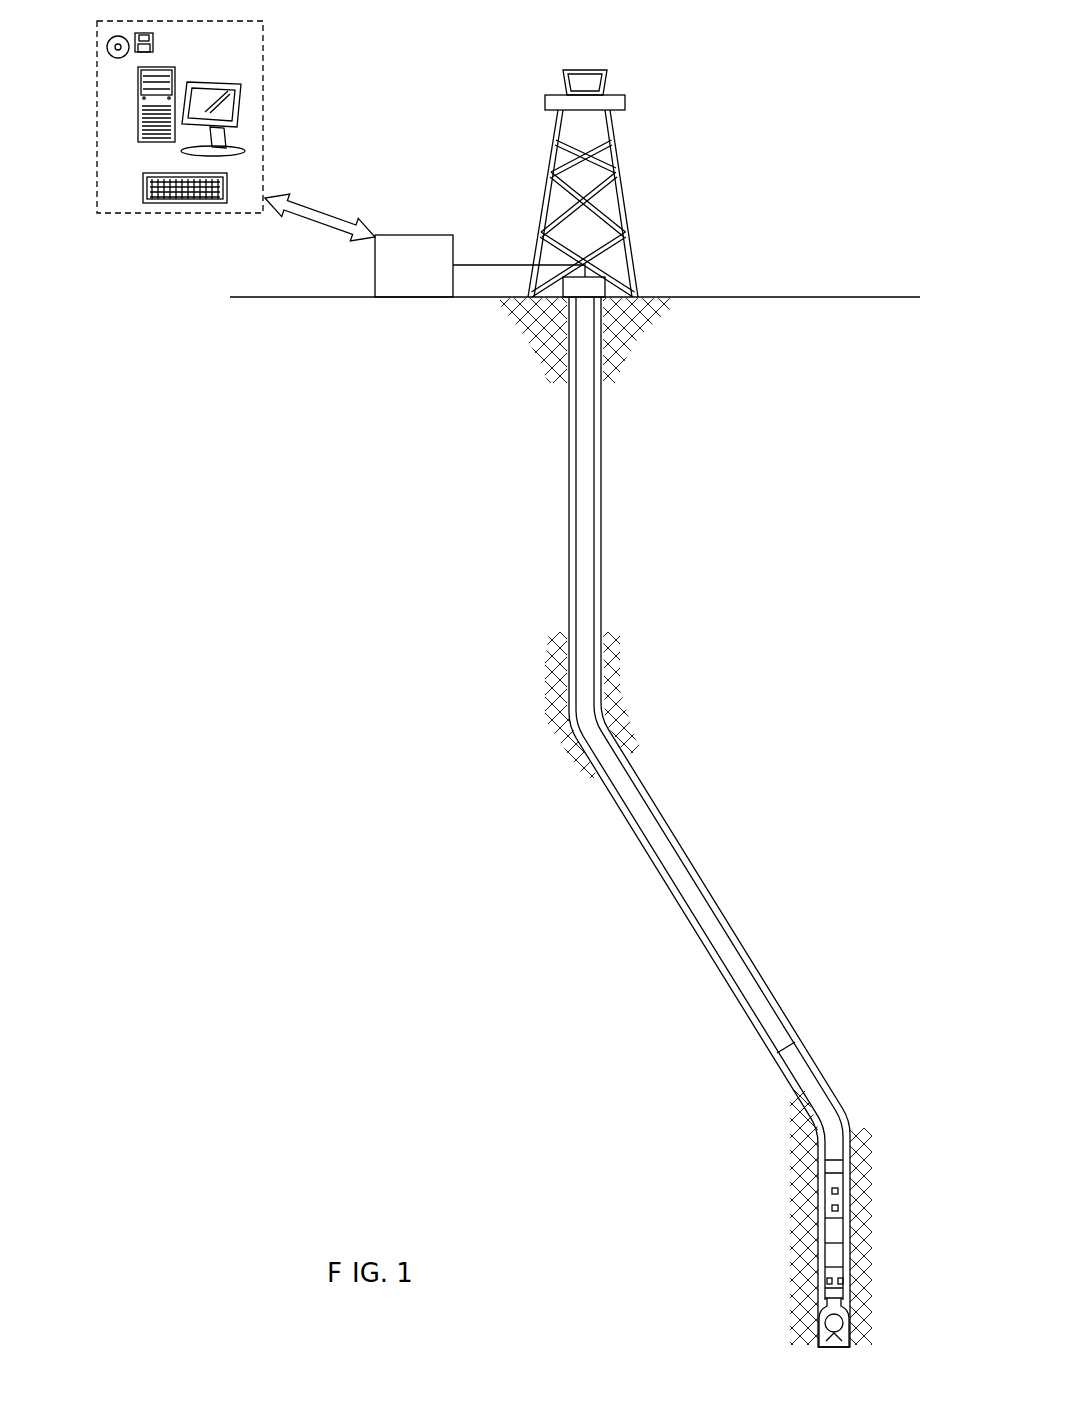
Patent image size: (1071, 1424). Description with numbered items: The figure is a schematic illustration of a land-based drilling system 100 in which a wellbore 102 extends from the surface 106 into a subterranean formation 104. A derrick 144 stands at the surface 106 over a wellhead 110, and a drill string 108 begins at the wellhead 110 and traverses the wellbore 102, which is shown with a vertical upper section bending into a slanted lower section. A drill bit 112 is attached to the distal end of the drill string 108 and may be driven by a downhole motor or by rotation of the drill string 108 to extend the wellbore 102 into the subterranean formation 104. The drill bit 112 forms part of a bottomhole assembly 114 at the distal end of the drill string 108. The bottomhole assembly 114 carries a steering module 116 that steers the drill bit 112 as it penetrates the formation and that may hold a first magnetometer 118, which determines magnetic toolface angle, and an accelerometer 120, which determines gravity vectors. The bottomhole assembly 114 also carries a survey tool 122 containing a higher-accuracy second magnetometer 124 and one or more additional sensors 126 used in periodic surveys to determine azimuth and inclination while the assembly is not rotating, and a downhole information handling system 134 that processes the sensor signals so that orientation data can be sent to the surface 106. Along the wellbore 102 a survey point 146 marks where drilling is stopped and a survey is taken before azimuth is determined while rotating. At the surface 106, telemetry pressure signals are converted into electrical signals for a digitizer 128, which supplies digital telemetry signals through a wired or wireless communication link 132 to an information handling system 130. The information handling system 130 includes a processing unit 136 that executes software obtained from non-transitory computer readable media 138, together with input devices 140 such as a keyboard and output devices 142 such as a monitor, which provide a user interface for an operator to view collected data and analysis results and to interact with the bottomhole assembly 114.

The drilling system 100 is at (822, 645).
The wellbore 102 is at (566, 505).
The subterranean formation 104 is at (707, 667).
The surface 106 is at (852, 297).
The drill string 108 is at (575, 592).
The wellhead 110 is at (633, 272).
The drill bit 112 is at (848, 1310).
The bottomhole assembly 114 is at (853, 1180).
The steering module 116 is at (845, 1275).
The first magnetometer 118 is at (830, 1277).
The accelerometer 120 is at (844, 1284).
The survey tool 122 is at (840, 1204).
The second magnetometer 124 is at (840, 1210).
The additional sensors 126 is at (840, 1192).
The digitizer 128 is at (438, 278).
The information handling system 130 is at (264, 46).
The communication link 132 is at (330, 208).
The downhole information handling system 134 is at (843, 1177).
The processing unit 136 is at (135, 108).
The non-transitory computer readable media 138 is at (124, 32).
The input device 140 is at (163, 205).
The output device 142 is at (241, 93).
The derrick 144 is at (621, 168).
The survey point 146 is at (802, 1034).